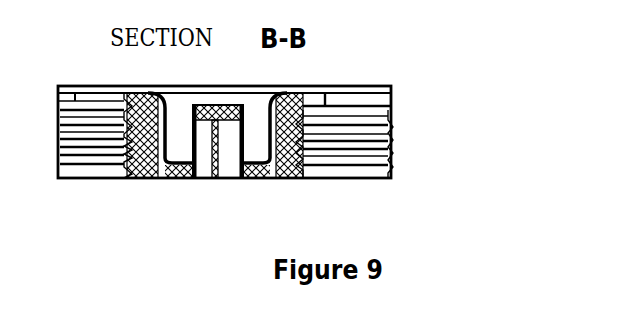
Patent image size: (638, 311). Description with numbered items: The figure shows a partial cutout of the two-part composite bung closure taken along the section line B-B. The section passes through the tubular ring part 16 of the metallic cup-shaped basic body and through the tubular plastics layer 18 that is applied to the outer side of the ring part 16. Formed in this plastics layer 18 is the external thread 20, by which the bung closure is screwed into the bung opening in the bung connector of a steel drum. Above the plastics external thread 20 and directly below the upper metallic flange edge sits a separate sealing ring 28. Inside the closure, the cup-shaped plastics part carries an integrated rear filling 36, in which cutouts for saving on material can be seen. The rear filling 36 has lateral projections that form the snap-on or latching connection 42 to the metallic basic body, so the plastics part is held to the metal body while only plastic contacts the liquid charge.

The tubular ring part 16 is at (103, 180).
The tubular plastics layer 18 is at (291, 178).
The external thread 20 is at (388, 134).
The sealing ring 28 is at (390, 106).
The rear filling 36 is at (173, 178).
The snap-on/latching connection 42 is at (229, 142).